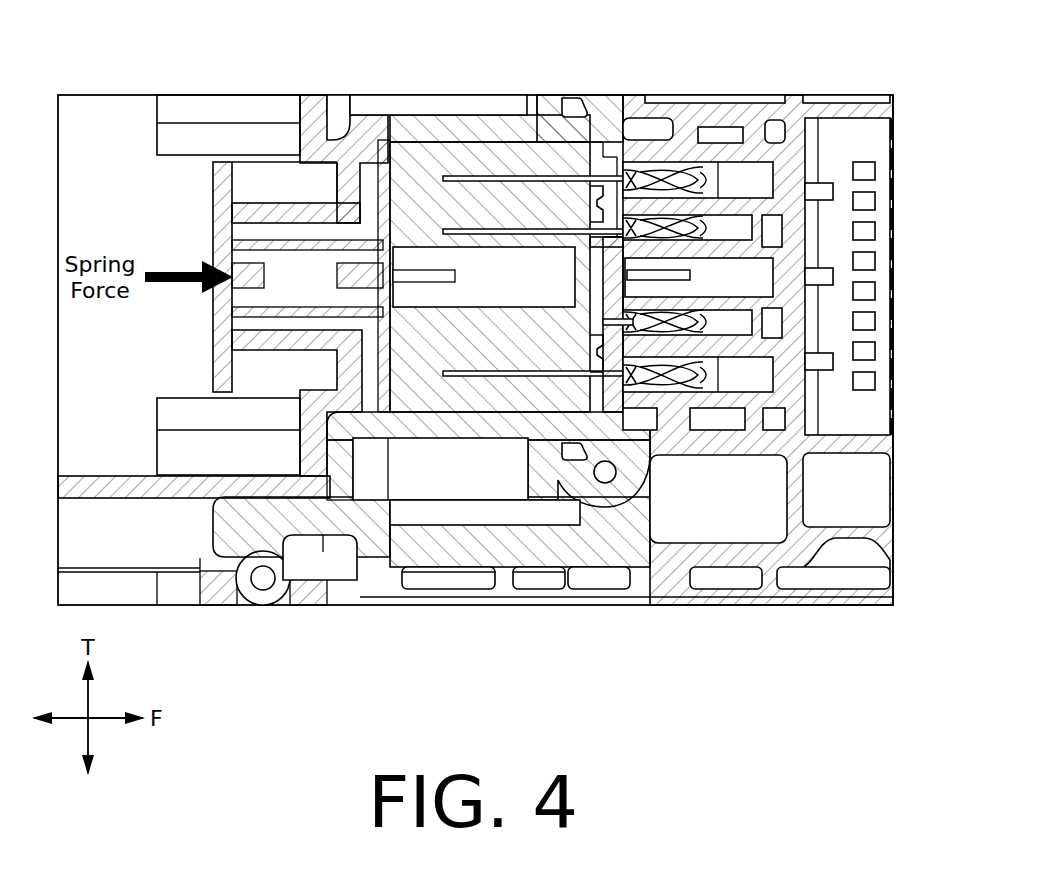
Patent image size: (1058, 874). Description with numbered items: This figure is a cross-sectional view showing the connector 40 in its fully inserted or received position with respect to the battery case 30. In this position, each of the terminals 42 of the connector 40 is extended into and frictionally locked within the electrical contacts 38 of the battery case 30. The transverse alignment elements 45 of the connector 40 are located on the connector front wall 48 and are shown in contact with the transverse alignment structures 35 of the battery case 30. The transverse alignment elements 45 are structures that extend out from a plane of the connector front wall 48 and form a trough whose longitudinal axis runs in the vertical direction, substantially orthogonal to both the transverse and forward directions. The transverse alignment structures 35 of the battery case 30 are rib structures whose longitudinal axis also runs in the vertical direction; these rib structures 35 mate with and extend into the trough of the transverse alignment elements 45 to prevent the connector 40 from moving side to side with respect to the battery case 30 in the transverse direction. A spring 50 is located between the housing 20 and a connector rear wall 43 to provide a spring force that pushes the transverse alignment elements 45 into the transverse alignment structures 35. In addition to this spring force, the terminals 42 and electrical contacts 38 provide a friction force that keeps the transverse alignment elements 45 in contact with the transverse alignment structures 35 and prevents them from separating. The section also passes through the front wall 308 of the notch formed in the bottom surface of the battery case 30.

The housing 20 is at (110, 475).
The battery case 30 is at (762, 113).
The transverse alignment structures 35 is at (617, 205).
The electrical contacts 38 is at (693, 165).
The connector 40 is at (442, 158).
The terminals 42 is at (505, 176).
The connector rear wall 43 is at (385, 181).
The transverse alignment elements 45 is at (592, 208).
The connector front wall 48 is at (582, 272).
The spring 50 is at (263, 313).
The front wall 308 is at (690, 277).